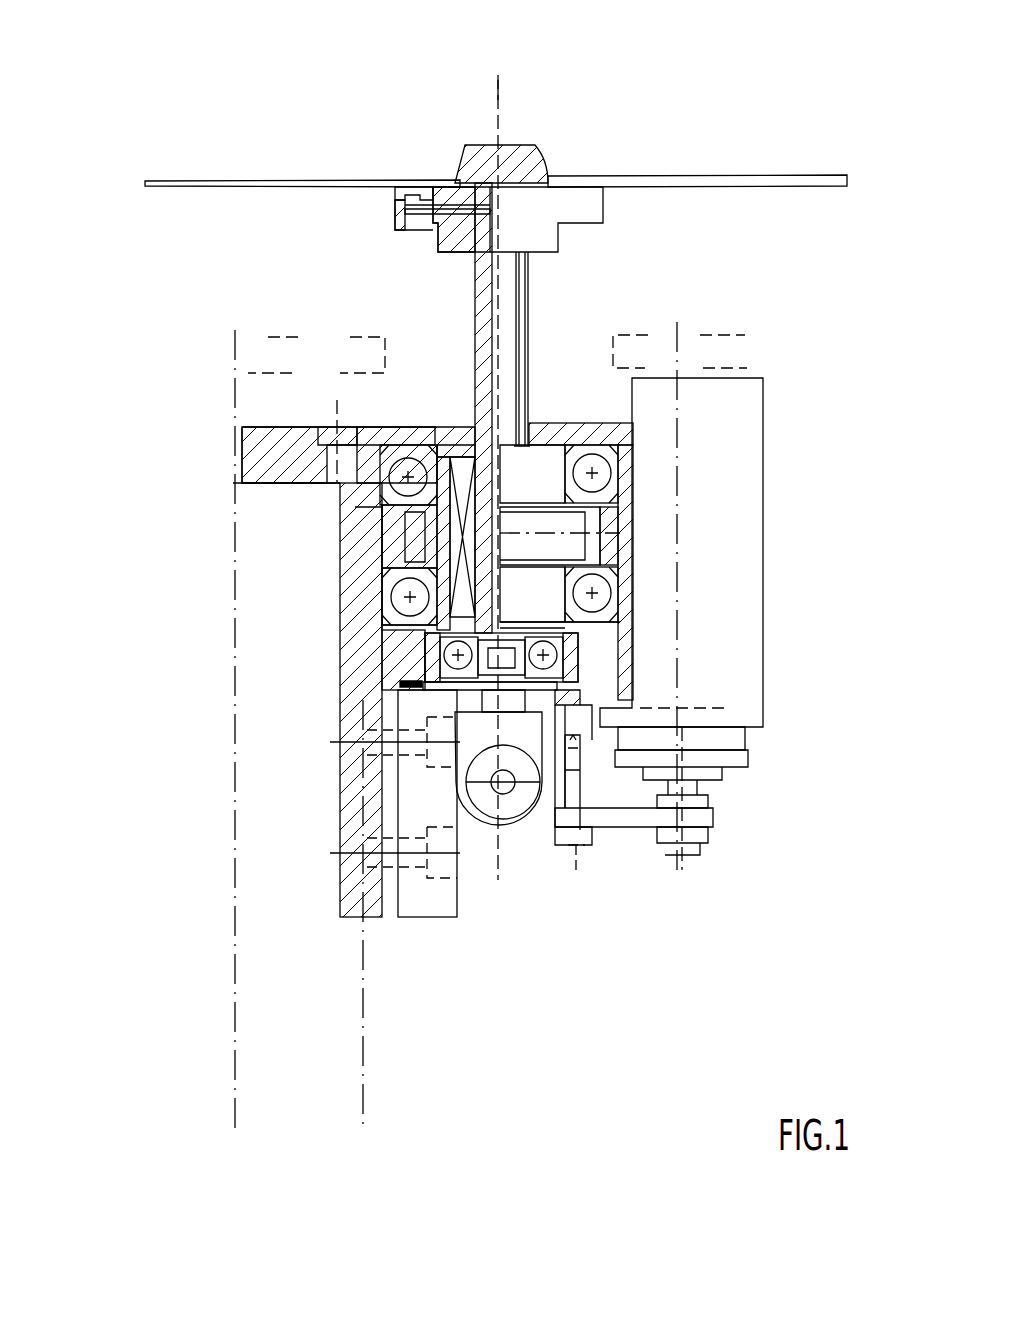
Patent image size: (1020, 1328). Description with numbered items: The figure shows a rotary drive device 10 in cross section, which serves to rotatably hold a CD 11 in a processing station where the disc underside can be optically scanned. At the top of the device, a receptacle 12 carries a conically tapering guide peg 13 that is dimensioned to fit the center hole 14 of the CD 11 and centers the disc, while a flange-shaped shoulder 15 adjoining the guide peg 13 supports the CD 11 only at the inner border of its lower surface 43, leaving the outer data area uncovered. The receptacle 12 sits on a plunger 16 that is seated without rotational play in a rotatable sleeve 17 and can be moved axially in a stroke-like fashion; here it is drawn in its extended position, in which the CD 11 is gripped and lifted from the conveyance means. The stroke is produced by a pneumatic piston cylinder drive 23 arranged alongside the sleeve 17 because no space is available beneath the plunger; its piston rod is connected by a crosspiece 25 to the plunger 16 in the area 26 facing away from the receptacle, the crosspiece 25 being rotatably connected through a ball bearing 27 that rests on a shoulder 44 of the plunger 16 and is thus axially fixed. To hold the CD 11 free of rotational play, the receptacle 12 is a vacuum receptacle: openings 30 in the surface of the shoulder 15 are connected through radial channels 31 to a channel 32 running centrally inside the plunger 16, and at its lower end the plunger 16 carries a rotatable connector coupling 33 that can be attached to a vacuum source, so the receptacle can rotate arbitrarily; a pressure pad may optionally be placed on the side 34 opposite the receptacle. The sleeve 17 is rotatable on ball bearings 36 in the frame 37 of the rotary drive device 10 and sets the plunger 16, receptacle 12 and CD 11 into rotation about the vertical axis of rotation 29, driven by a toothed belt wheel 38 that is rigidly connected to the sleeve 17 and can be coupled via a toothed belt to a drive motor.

The rotary drive device 10 is at (148, 334).
The CD 11 is at (215, 185).
The receptacle 12 is at (592, 243).
The guide peg 13 is at (527, 150).
The center hole 14 is at (455, 170).
The flange-shaped shoulder 15 is at (570, 232).
The plunger 16 is at (530, 335).
The rotatable sleeve 17 is at (575, 422).
The pneumatic piston cylinder drive 23 is at (740, 538).
The crosspiece 25 is at (617, 828).
The area 26 is at (400, 684).
The ball bearing 27 is at (455, 700).
The axis of rotation 29 is at (497, 112).
The openings 30 is at (405, 205).
The radial channels 31 is at (440, 232).
The channel 32 is at (488, 296).
The rotatable connector coupling 33 is at (500, 822).
The side 34 is at (562, 46).
The ball bearings 36 is at (340, 500).
The frame 37 is at (425, 645).
The toothed belt wheel 38 is at (405, 530).
The lower surface 43 is at (790, 186).
The shoulder 44 is at (430, 648).